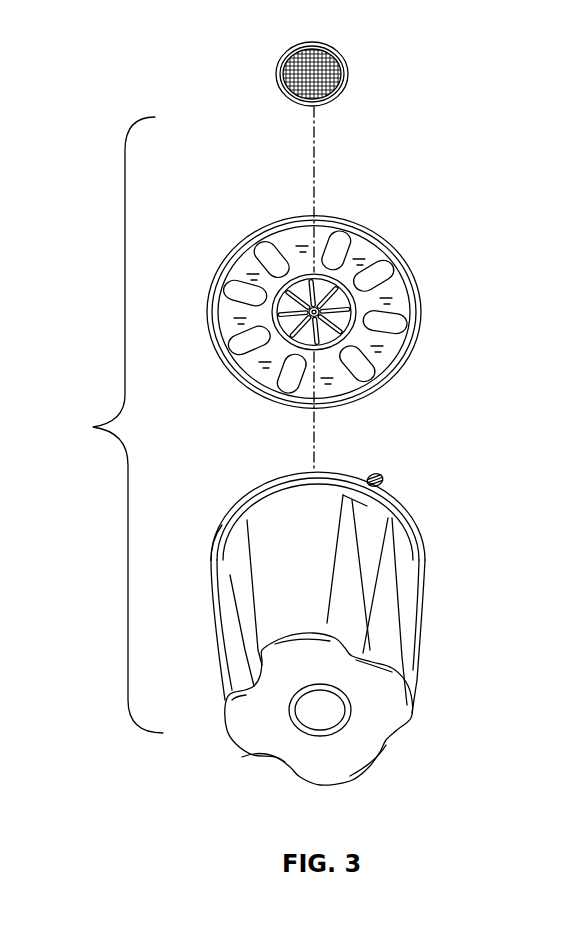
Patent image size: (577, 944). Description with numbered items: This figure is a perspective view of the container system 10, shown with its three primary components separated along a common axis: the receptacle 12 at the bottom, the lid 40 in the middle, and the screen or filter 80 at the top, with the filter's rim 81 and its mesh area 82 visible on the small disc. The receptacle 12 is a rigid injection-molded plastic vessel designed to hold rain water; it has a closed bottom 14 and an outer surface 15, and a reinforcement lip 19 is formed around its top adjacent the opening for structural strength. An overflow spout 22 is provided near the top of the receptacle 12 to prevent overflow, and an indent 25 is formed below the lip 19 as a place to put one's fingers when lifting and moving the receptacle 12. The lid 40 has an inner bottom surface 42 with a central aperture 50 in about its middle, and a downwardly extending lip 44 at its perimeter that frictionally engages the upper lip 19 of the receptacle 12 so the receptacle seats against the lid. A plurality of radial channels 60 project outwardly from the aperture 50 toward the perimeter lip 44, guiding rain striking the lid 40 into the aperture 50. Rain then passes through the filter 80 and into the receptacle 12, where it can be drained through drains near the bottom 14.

The container system 10 is at (349, 618).
The receptacle 12 is at (349, 638).
The closed bottom 14 is at (333, 763).
The outer surface 15 is at (397, 645).
The reinforcement lip 19 is at (420, 508).
The overflow spout 22 is at (392, 470).
The indent 25 is at (217, 522).
The lid 40 is at (328, 283).
The inner bottom surface 42 is at (362, 250).
The downwardly extending lip 44 is at (421, 276).
The central aperture 50 is at (233, 370).
The radial channel 60 is at (270, 243).
The screen or filter 80 is at (280, 98).
The cap rim 81 is at (283, 95).
The cap screen 82 is at (292, 68).